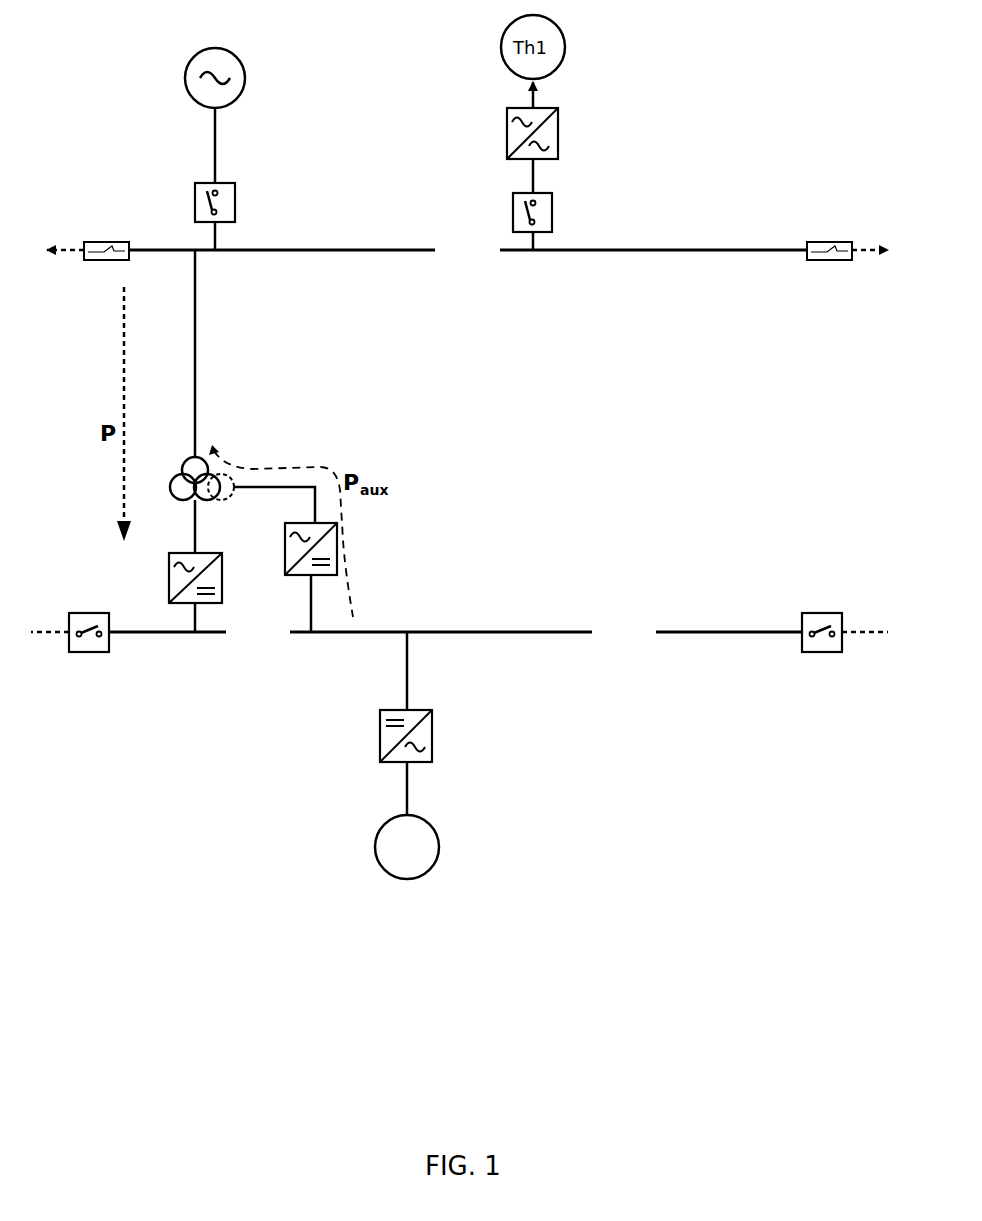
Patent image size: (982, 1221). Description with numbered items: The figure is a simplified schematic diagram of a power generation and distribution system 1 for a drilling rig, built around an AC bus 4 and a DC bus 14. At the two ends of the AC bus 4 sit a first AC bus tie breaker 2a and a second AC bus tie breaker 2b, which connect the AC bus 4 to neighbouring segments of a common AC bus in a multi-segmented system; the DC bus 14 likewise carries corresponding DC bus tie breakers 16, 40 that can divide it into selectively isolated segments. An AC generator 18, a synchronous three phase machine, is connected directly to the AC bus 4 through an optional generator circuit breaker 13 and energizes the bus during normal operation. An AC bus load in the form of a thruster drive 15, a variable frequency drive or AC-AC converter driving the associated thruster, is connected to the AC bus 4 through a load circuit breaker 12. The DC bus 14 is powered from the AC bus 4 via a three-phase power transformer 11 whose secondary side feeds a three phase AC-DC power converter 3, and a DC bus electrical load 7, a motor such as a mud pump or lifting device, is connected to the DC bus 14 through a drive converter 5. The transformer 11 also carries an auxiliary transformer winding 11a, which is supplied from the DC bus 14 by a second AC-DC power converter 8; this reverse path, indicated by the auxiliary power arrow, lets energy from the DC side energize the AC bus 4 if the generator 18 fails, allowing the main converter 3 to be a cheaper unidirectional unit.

The power generation and distribution system 1 is at (150, 759).
The first AC bus tie breaker 2a is at (113, 242).
The second AC bus tie breaker 2b is at (815, 242).
The three phase AC-DC power converter 3 is at (168, 576).
The AC bus 4 is at (510, 253).
The DC/AC converter (motor drive) 5 is at (377, 737).
The DC bus electrical load 7 is at (371, 836).
The second AC-DC power converter 8 is at (339, 549).
The three-phase power transformer 11 is at (186, 458).
The auxiliary transformer winding 11a is at (231, 471).
The load circuit breaker 12 is at (556, 212).
The generator circuit breaker 13 is at (237, 210).
The DC bus 14 is at (547, 633).
The thruster drive 15 is at (563, 138).
The DC bus tie breaker 16 is at (85, 613).
The AC generator 18 is at (178, 78).
The DC bus tie breaker 40 is at (827, 613).